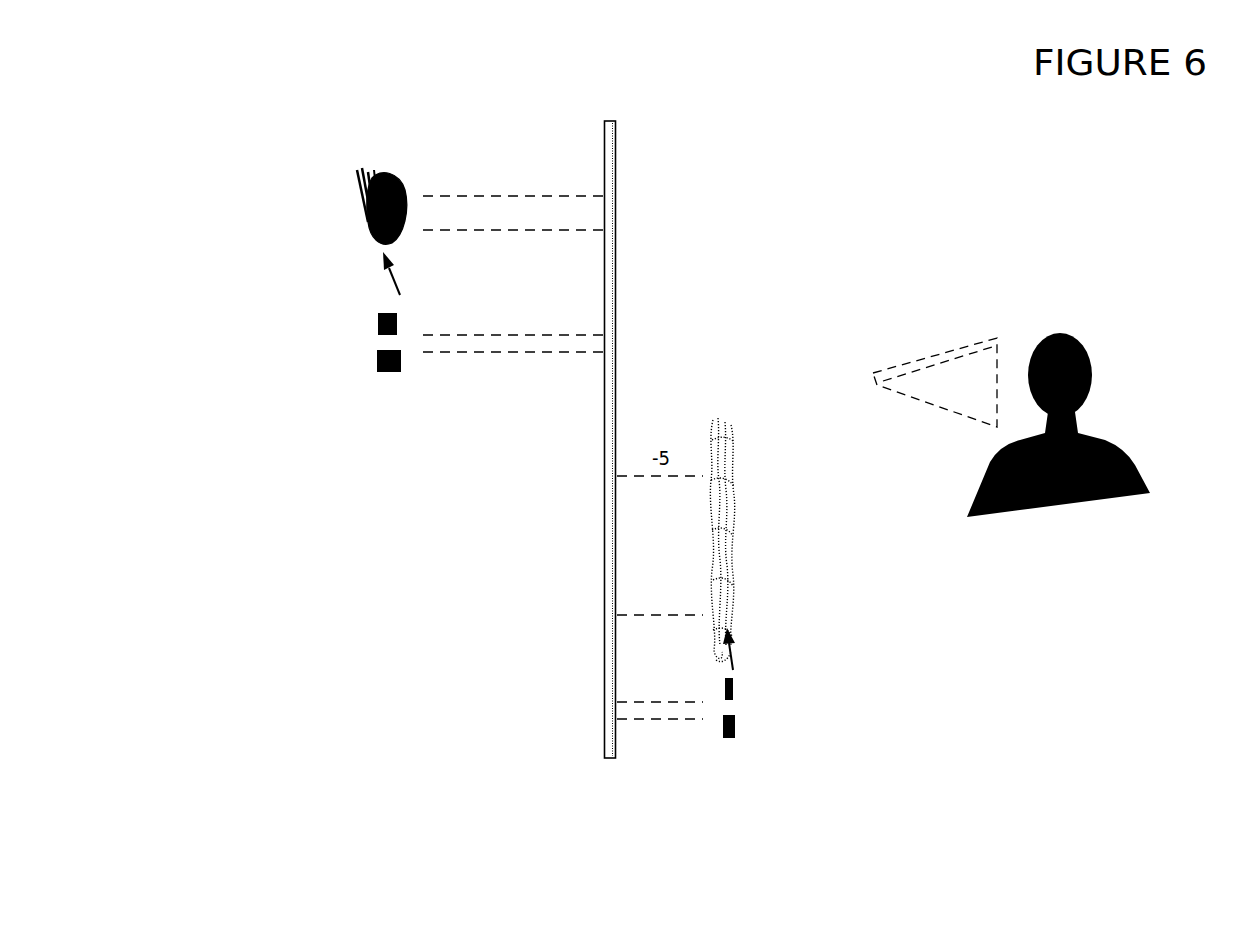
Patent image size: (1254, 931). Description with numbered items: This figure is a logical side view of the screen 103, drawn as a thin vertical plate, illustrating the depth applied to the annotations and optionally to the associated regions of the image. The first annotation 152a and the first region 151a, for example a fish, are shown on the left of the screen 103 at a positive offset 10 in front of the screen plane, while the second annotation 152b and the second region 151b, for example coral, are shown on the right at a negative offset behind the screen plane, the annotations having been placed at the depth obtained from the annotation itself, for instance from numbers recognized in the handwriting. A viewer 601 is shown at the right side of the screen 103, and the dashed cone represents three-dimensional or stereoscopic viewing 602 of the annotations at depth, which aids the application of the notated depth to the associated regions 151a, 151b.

The screen 103 is at (615, 765).
The distance offset in front of screen 10 is at (513, 258).
The first region 151a is at (370, 163).
The first annotation 152a is at (370, 337).
The second region 151b is at (747, 512).
The second annotation 152b is at (767, 677).
The viewer 601 is at (1068, 317).
The three-dimensional or stereoscopic viewing 602 is at (957, 340).